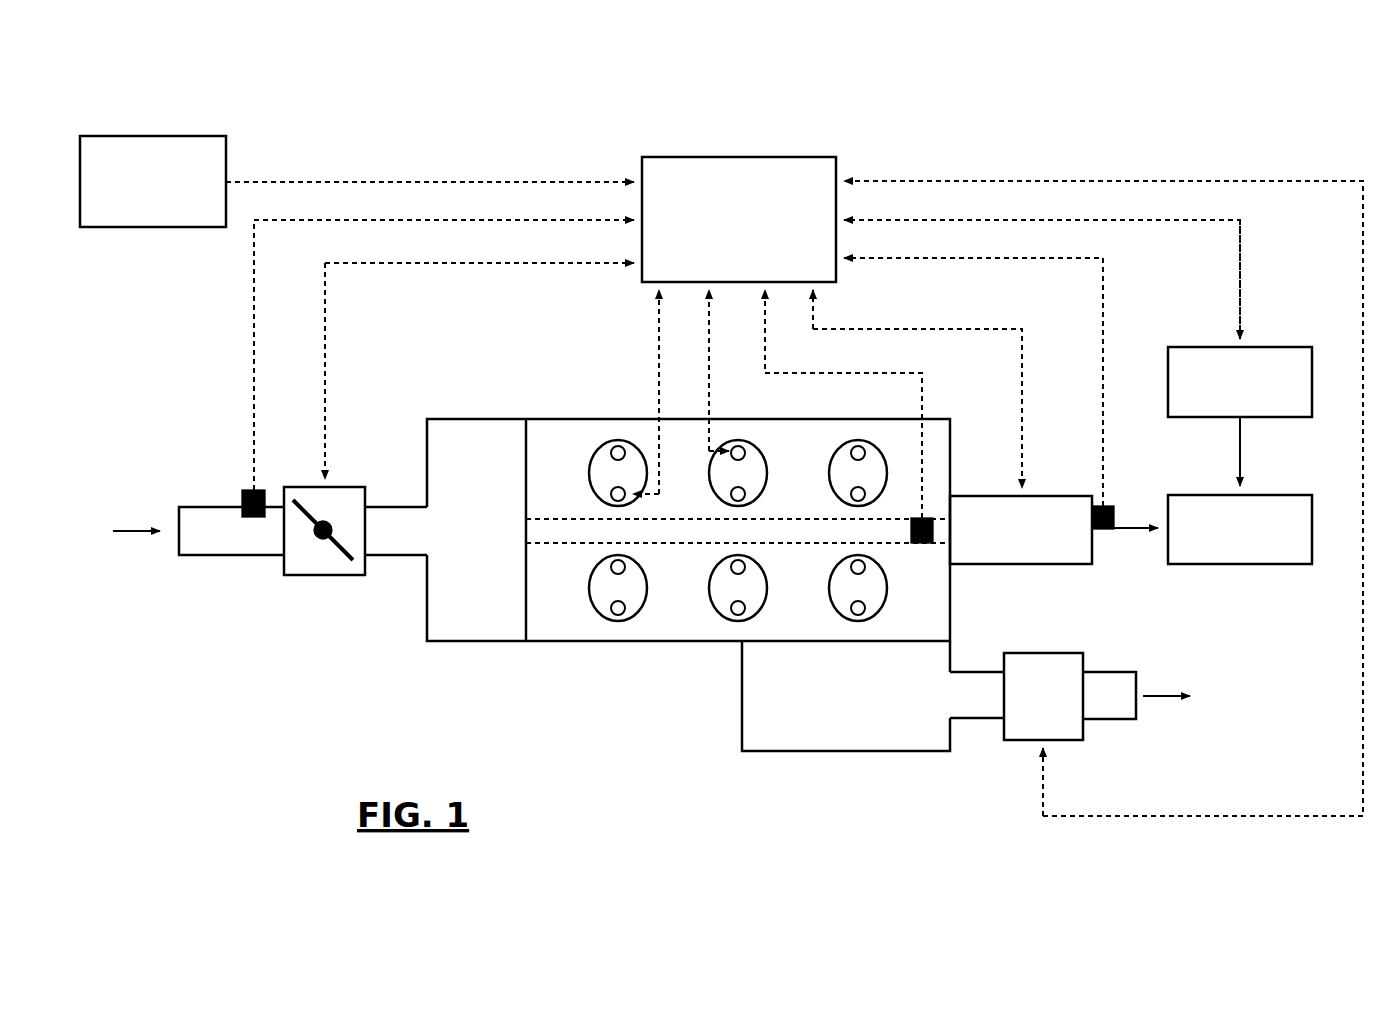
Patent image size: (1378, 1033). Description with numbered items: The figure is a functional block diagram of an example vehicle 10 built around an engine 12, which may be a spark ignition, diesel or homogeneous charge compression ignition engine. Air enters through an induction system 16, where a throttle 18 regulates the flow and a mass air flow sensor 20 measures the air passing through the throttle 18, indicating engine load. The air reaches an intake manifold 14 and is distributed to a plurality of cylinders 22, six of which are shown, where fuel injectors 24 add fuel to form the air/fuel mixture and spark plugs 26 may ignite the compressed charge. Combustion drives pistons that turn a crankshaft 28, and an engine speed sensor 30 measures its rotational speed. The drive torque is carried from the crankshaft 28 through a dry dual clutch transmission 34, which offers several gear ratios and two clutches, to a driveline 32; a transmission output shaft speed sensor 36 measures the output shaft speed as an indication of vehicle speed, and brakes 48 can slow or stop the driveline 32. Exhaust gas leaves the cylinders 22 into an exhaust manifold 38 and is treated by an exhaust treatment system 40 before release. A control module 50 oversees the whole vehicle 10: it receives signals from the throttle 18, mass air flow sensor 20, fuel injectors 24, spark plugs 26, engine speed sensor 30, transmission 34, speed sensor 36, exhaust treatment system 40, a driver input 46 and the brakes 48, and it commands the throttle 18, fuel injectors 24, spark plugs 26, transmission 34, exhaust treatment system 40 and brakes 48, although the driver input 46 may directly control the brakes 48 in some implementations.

The vehicle 10 is at (1150, 77).
The engine 12 is at (570, 641).
The intake manifold 14 is at (475, 641).
The induction system 16 is at (205, 507).
The throttle 18 is at (325, 575).
The mass air flow sensor 20 is at (254, 517).
The cylinders 22 is at (640, 610).
The fuel injectors 24 is at (611, 568).
The spark plugs 26 is at (853, 607).
The crankshaft 28 is at (738, 531).
The engine speed sensor 30 is at (922, 543).
The driveline 32 is at (1245, 564).
The dry dual clutch transmission 34 is at (1025, 564).
The transmission output shaft speed sensor 36 is at (1103, 529).
The exhaust manifold 38 is at (846, 751).
The exhaust treatment system 40 is at (1045, 653).
The driver input 46 is at (153, 136).
The brakes 48 is at (1277, 347).
The control module 50 is at (745, 157).